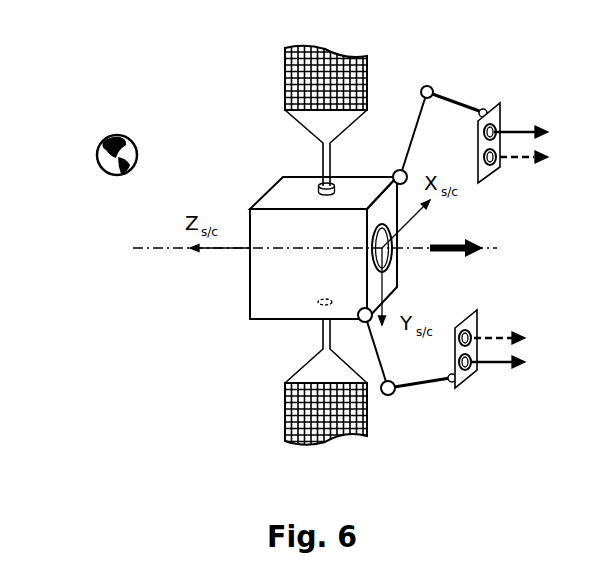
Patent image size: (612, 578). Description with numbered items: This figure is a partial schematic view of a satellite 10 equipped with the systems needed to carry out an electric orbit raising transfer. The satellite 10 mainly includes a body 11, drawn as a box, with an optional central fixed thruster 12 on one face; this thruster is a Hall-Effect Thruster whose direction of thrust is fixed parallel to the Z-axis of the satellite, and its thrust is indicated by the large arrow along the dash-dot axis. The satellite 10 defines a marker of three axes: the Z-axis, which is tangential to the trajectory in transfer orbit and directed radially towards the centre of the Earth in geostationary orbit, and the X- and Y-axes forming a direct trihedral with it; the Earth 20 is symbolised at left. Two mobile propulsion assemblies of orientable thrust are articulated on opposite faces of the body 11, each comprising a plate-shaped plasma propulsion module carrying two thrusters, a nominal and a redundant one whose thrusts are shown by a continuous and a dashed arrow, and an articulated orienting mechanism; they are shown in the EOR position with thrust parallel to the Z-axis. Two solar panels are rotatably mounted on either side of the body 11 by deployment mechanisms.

The satellite 10 is at (172, 102).
The body 11 is at (250, 270).
The central fixed thruster 12 is at (398, 258).
The Earth 20 is at (95, 155).